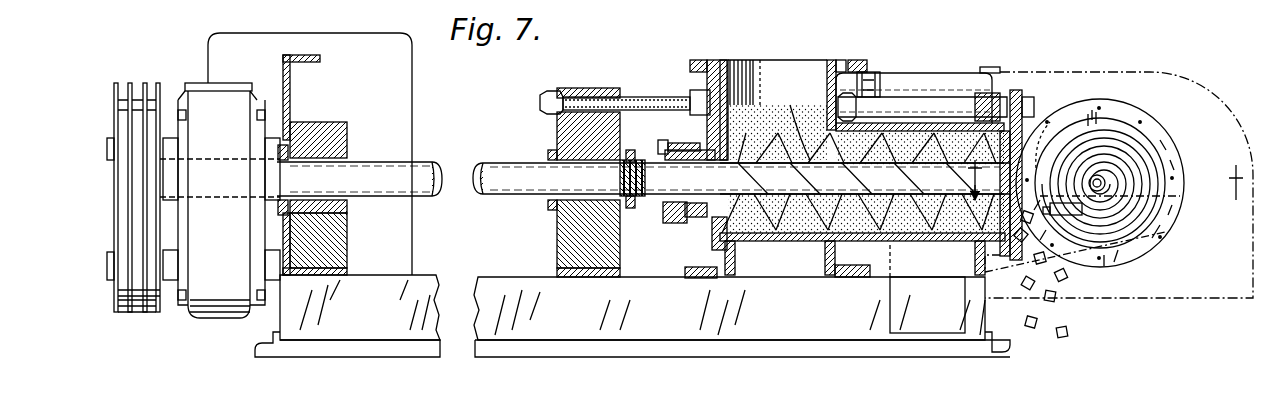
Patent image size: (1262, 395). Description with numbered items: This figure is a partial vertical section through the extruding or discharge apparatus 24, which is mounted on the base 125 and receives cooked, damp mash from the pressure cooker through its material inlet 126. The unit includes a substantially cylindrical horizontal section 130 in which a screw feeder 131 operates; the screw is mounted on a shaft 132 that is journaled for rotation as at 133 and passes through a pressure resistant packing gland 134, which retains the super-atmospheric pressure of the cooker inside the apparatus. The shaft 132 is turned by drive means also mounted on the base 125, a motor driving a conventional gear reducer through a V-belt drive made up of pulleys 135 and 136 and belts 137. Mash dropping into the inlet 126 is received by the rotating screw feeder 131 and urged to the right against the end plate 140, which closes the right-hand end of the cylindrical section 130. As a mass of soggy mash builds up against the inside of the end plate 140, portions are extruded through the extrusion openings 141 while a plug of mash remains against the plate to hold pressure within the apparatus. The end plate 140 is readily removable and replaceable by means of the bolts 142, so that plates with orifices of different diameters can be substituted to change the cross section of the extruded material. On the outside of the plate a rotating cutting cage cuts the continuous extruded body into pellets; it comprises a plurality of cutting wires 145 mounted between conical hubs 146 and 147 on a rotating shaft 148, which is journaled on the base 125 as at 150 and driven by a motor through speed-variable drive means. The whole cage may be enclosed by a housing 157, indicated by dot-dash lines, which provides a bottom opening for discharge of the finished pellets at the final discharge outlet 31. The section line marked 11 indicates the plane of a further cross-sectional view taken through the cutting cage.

The extruding or discharge apparatus 24 is at (908, 50).
The final discharge outlet 31 is at (1158, 304).
The base 125 is at (843, 335).
The material inlet 126 is at (754, 66).
The cylindrical horizontal section 130 is at (800, 242).
The screw feeder 131 is at (788, 132).
The shaft 132 is at (386, 163).
The journal 133 is at (248, 35).
The packing gland 134 is at (222, 290).
The pulley 135 is at (114, 112).
The pulley 136 is at (114, 312).
The belts 137 is at (150, 82).
The end plate 140 is at (1034, 125).
The extrusion openings 141 is at (1090, 140).
The bolts 142 is at (1018, 105).
The cutting wires 145 is at (1140, 120).
The conical hub 146 is at (1160, 236).
The conical hub 147 is at (1130, 166).
The rotating shaft 148 is at (1098, 172).
The journal 150 is at (1120, 190).
The housing 157 is at (1222, 104).
The section line 11 is at (1103, 181).